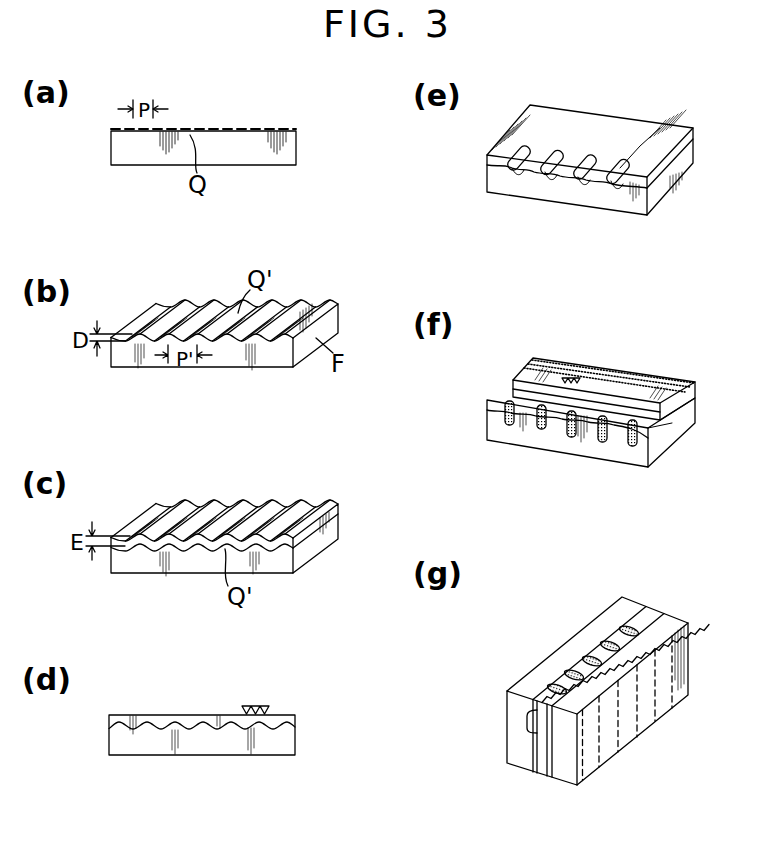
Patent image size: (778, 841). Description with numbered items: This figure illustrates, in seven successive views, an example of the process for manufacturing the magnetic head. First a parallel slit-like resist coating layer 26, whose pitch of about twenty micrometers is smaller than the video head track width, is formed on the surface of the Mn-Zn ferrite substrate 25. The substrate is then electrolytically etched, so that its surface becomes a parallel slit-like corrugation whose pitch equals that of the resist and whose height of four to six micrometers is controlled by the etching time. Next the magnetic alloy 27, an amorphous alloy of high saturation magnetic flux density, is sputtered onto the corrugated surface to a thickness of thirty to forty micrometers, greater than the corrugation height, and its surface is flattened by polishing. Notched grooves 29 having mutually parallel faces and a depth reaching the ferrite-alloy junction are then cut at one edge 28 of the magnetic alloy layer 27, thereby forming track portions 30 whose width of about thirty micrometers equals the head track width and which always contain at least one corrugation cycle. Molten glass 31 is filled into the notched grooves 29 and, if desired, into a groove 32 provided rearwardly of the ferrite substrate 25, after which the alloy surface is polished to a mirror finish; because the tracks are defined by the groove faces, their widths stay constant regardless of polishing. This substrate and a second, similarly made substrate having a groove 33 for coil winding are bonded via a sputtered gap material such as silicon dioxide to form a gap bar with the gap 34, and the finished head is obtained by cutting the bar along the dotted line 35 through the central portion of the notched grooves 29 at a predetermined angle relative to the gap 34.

The ferrite substrate 25 is at (253, 160).
The resist coating layer 26 is at (258, 128).
The magnetic alloy 27 is at (245, 513).
The edge 28 is at (636, 167).
The notched grooves 29 is at (622, 188).
The track portions 30 is at (592, 168).
The glass 31 is at (619, 371).
The groove 32 is at (690, 390).
The groove for coil winding 33 is at (673, 419).
The gap 34 is at (652, 611).
The dotted line 35 is at (617, 722).